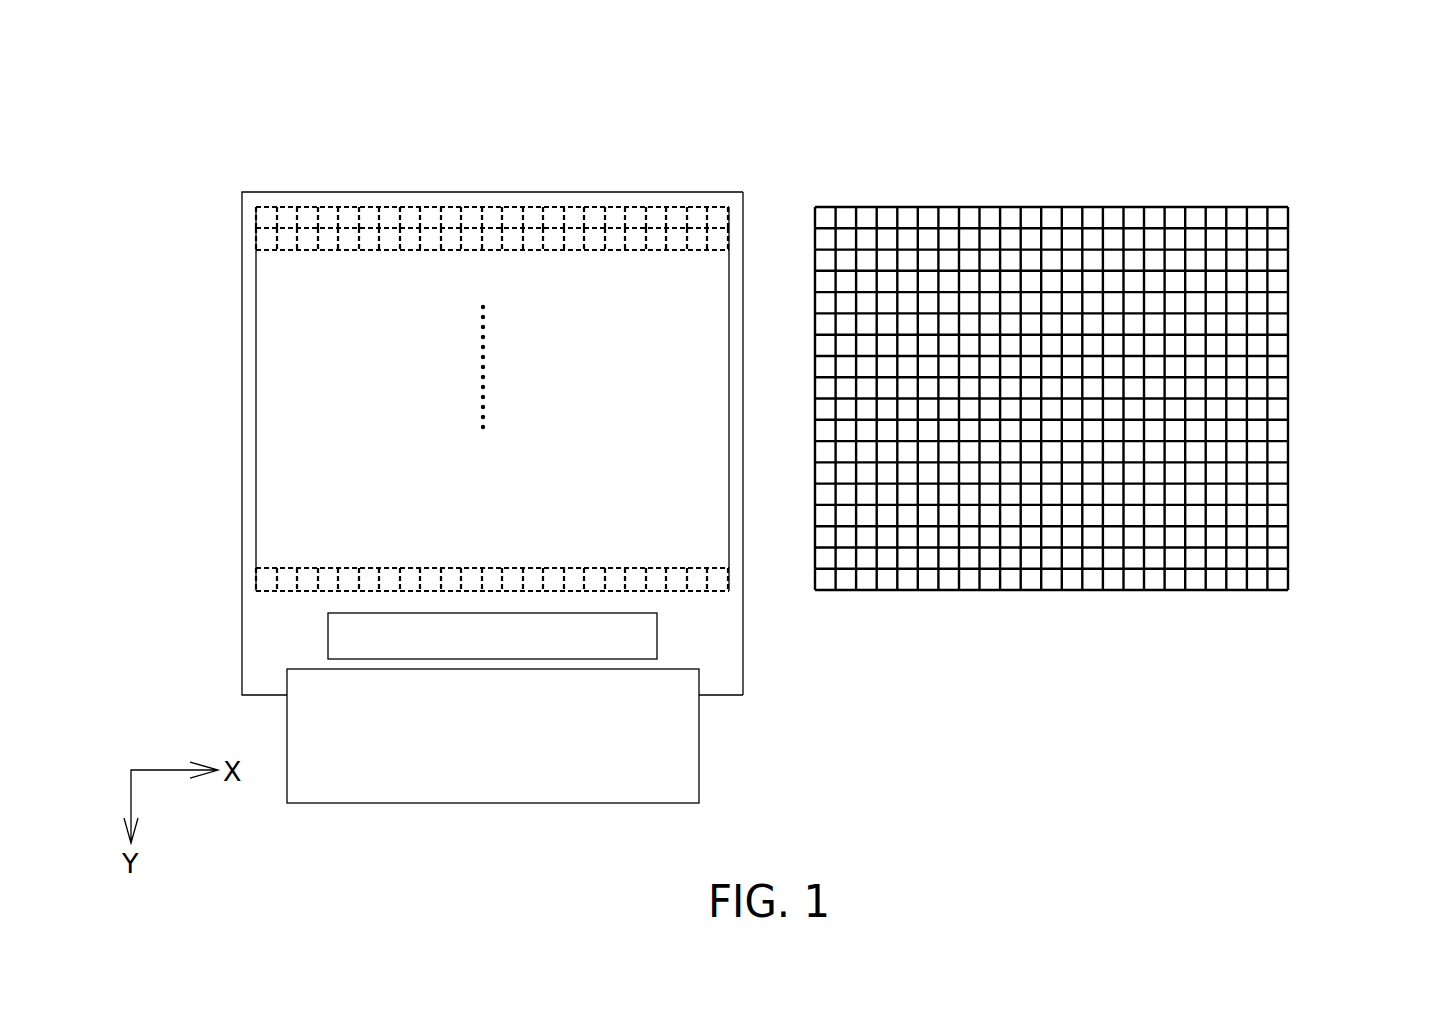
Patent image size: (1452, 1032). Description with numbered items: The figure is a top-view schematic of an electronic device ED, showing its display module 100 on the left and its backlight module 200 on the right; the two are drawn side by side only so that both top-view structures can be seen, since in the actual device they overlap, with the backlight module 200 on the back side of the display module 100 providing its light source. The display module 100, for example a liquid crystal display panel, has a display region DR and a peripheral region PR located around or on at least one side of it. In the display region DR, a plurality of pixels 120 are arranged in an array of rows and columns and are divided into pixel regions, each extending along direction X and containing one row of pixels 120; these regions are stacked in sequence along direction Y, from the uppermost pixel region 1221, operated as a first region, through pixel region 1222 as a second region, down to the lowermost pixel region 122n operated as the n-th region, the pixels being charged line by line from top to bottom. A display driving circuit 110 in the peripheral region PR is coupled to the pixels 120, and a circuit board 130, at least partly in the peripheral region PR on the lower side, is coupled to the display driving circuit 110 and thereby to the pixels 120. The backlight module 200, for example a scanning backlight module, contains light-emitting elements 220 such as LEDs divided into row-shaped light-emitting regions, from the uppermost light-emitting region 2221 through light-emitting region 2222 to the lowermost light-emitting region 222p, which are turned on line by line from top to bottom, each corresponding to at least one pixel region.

The display module 100 is at (454, 445).
The display driving circuit 110 is at (348, 636).
The pixels 120 is at (411, 358).
The circuit board 130 is at (535, 772).
The backlight module 200 is at (1133, 344).
The light-emitting elements 220 is at (1133, 360).
The pixel region 1221 is at (246, 222).
The pixel region 1222 is at (246, 245).
The pixel region 122n is at (246, 583).
The light-emitting region 2221 is at (1300, 223).
The light-emitting region 2222 is at (1300, 245).
The light-emitting region 222p is at (1300, 585).
The electronic device ED is at (216, 122).
The display region DR is at (256, 400).
The peripheral region PR is at (730, 670).